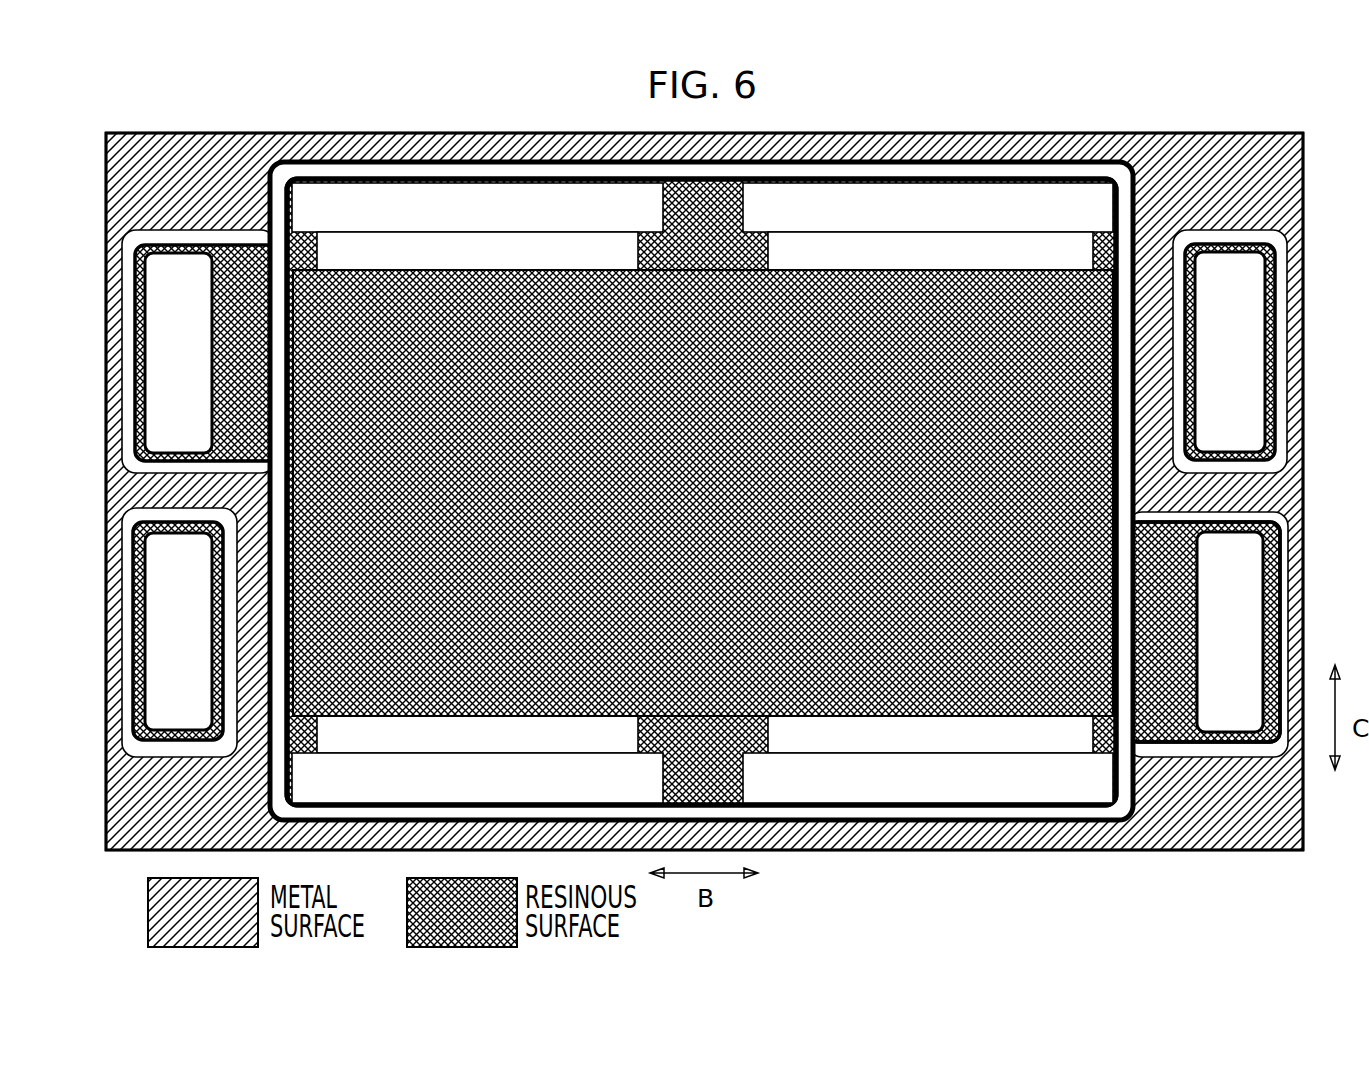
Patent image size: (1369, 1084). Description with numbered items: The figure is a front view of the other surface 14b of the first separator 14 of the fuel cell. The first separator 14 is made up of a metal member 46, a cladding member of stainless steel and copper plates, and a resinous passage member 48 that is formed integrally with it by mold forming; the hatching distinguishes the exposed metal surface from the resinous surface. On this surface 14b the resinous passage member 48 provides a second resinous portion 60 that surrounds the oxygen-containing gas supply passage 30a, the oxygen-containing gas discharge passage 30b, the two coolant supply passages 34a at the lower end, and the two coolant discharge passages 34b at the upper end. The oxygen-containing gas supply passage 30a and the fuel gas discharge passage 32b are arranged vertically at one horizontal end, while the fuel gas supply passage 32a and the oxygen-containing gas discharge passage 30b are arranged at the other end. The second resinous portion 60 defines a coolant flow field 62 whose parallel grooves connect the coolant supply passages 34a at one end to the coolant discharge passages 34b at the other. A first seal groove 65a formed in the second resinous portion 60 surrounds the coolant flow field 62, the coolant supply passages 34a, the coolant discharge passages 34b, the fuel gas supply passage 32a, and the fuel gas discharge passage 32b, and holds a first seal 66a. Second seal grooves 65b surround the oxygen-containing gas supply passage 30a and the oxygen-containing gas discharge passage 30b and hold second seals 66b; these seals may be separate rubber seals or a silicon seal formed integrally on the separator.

The first separator 14 is at (1069, 115).
The surface of the first separator 14b is at (1148, 837).
The oxygen-containing gas supply passage 30a is at (1230, 352).
The oxygen-containing gas discharge passage 30b is at (178, 631).
The fuel gas supply passage 32a is at (178, 353).
The fuel gas discharge passage 32b is at (1230, 632).
The coolant supply passages 34a is at (702, 759).
The coolant discharge passages 34b is at (702, 226).
The metal member 46 is at (1273, 483).
The resinous passage member 48 is at (675, 268).
The second resinous portion 60 is at (1173, 717).
The coolant flow field 62 is at (470, 682).
The first seal groove 65a is at (960, 827).
The second seal grooves 65b is at (121, 687).
The first seal 66a is at (830, 813).
The second seals 66b is at (133, 643).